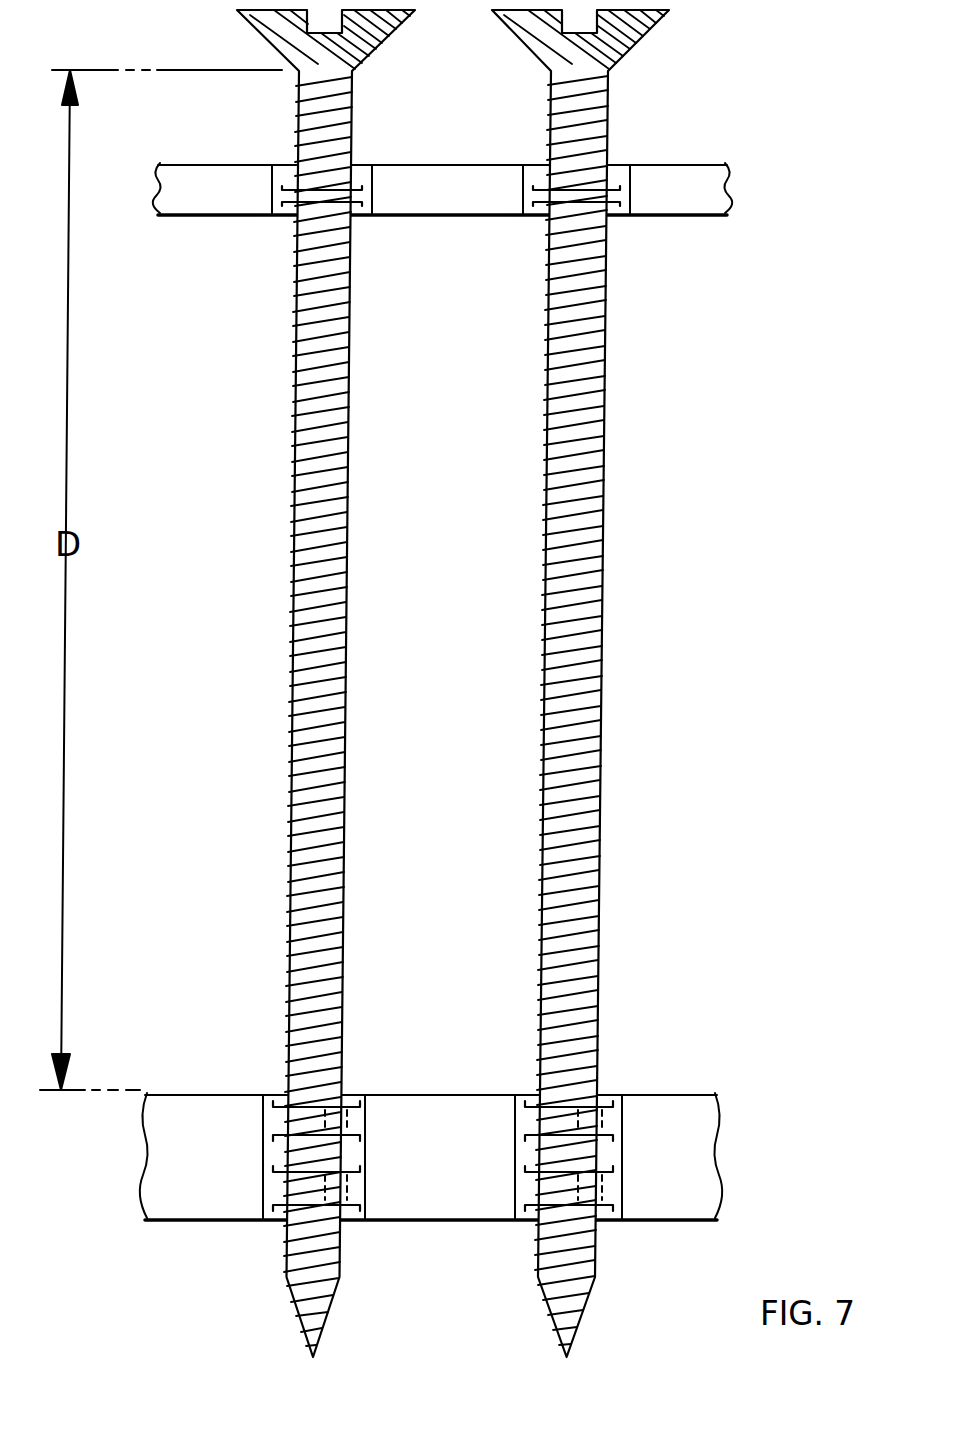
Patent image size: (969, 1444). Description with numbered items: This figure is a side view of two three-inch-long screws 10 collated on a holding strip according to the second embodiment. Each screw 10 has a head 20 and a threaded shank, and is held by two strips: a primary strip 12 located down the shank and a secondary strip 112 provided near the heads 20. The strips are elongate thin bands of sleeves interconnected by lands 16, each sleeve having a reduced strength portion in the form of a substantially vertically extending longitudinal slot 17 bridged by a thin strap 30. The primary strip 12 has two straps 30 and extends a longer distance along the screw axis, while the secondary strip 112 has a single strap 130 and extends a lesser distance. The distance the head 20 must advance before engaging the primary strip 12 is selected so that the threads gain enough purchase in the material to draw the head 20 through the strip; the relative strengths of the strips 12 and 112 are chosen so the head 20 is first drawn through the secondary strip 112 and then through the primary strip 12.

The screw 10 is at (495, 683).
The primary strip 12 is at (680, 1093).
The land 16 is at (456, 1178).
The longitudinal slot 17 is at (345, 1157).
The head 20 is at (637, 32).
The strap 30 is at (593, 1120).
The secondary strip 112 is at (680, 163).
The retaining clip 130 is at (613, 216).